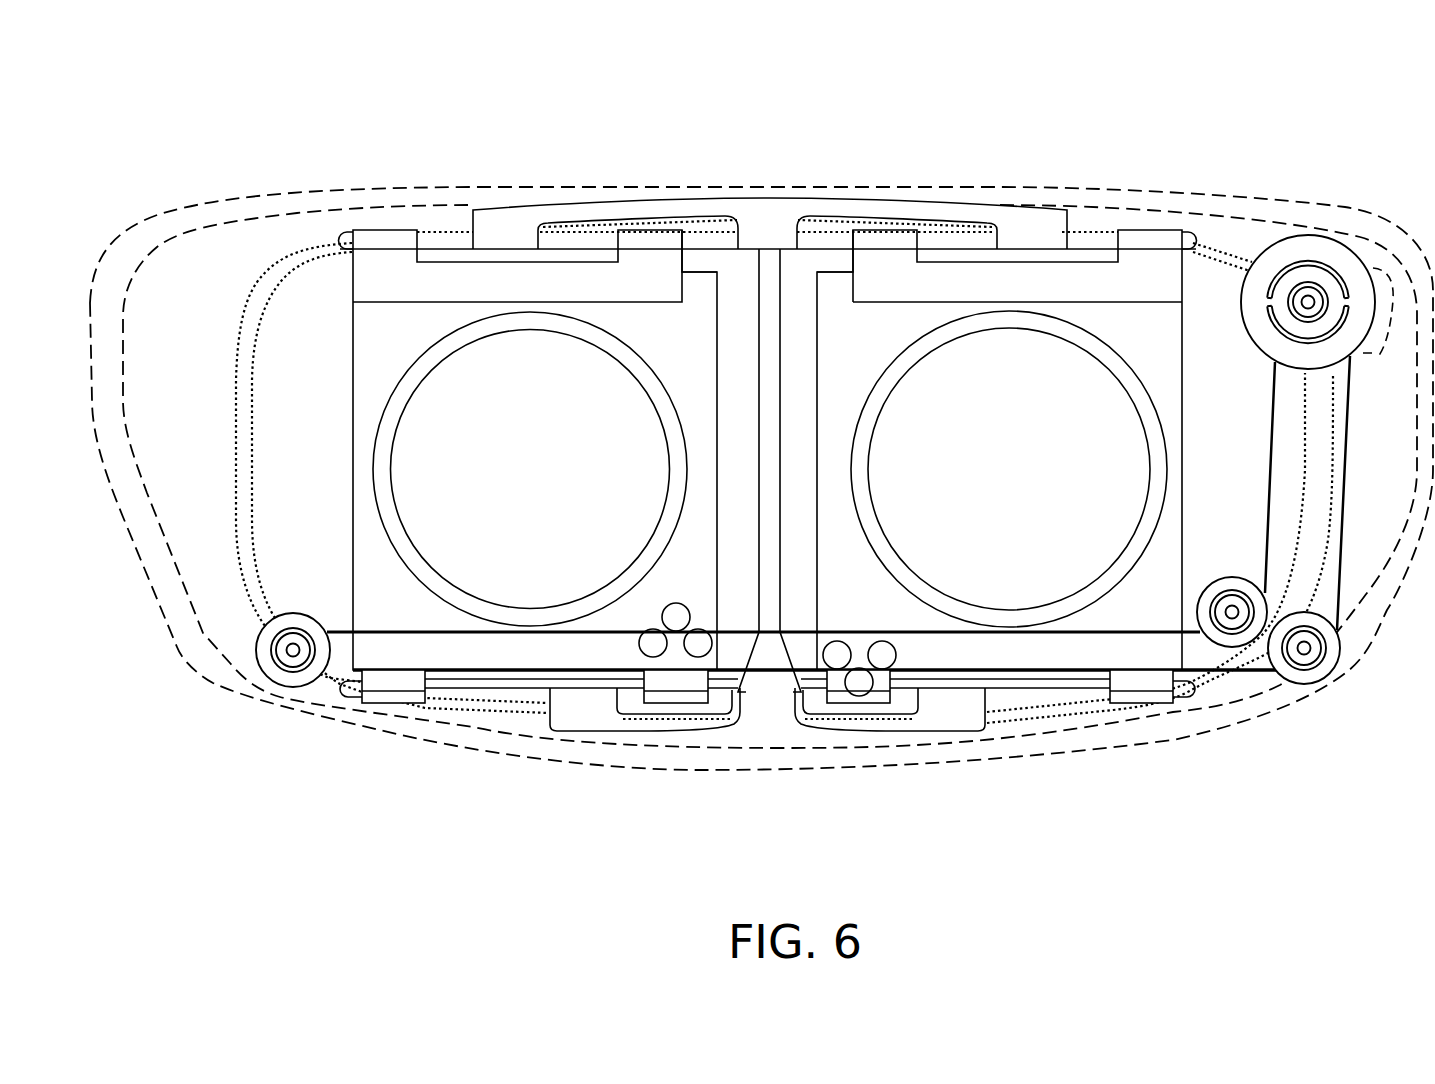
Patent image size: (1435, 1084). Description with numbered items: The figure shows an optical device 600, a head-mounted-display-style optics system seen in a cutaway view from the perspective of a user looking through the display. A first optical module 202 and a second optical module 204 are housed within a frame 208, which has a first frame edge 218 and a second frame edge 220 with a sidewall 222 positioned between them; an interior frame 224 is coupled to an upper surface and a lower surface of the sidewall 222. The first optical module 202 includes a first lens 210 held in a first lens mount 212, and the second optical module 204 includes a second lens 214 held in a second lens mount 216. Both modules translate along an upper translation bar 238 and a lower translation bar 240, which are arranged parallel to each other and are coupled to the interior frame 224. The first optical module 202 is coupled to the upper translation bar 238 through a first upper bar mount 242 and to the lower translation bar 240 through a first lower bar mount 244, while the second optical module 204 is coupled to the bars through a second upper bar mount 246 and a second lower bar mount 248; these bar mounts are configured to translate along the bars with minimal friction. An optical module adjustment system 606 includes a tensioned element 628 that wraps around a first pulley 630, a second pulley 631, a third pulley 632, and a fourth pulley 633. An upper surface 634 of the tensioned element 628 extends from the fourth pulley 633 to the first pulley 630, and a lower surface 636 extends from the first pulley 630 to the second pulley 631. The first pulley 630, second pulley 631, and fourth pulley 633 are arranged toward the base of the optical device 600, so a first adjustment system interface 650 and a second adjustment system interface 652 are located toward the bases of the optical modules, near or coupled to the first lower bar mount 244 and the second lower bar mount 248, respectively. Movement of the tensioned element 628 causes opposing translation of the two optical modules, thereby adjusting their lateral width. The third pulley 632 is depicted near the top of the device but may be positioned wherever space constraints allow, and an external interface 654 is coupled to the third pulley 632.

The optical device 600 is at (1056, 86).
The frame 208 is at (178, 170).
The optical module adjustment system 606 is at (1274, 170).
The sidewall 222 is at (160, 407).
The second frame edge 220 is at (233, 463).
The first frame edge 218 is at (143, 543).
The interior frame 224 is at (755, 226).
The upper translation bar 238 is at (1092, 233).
The first optical module 202 is at (340, 477).
The second optical module 204 is at (1196, 461).
The first upper bar mount 242 is at (375, 295).
The second upper bar mount 246 is at (1140, 295).
The first lens mount 212 is at (668, 343).
The second lens mount 216 is at (833, 343).
The first lens 210 is at (512, 511).
The second lens 214 is at (1000, 511).
The upper surface 634 is at (447, 630).
The tensioned element 628 is at (530, 683).
The first lower bar mount 244 is at (393, 714).
The second lower bar mount 248 is at (1132, 709).
The lower translation bar 240 is at (502, 695).
The lower surface 636 is at (1005, 673).
The first adjustment system interface 650 is at (706, 621).
The second adjustment system interface 652 is at (853, 642).
The first pulley 630 is at (280, 618).
The third pulley 632 is at (1243, 312).
The fourth pulley 633 is at (1245, 577).
The second pulley 631 is at (1342, 663).
The external interface 654 is at (1380, 350).